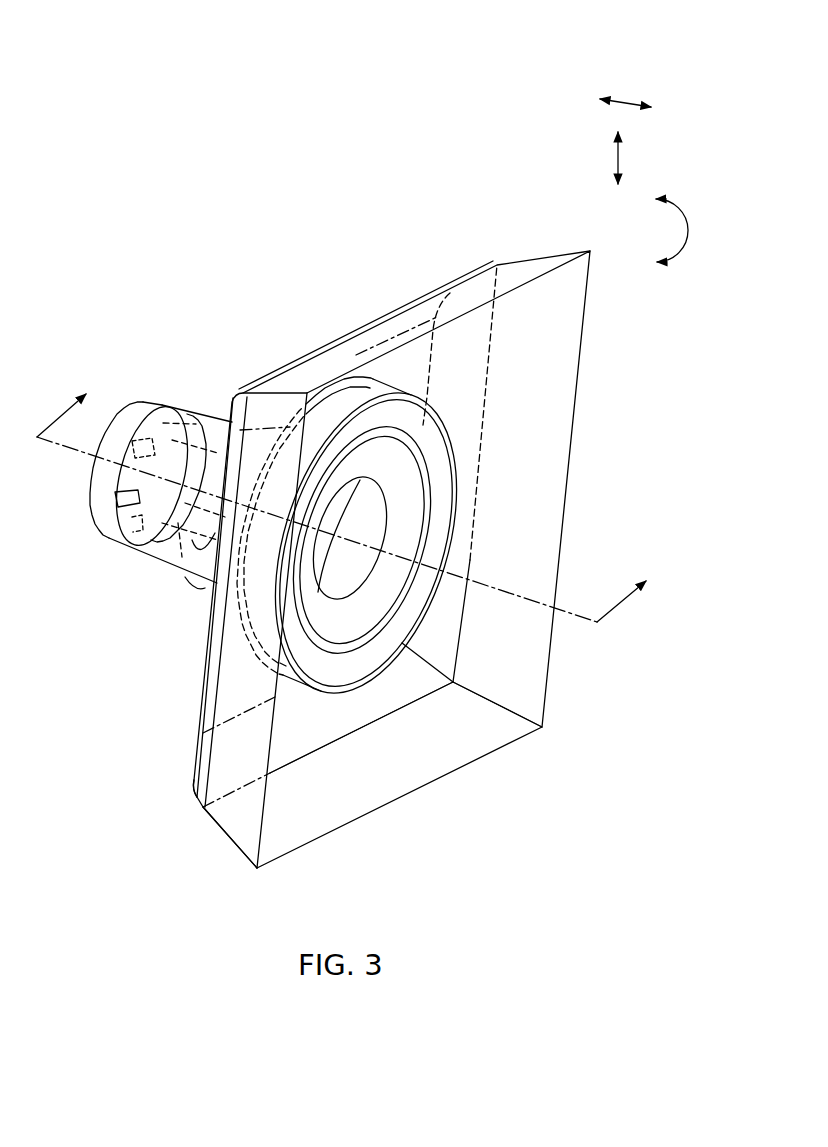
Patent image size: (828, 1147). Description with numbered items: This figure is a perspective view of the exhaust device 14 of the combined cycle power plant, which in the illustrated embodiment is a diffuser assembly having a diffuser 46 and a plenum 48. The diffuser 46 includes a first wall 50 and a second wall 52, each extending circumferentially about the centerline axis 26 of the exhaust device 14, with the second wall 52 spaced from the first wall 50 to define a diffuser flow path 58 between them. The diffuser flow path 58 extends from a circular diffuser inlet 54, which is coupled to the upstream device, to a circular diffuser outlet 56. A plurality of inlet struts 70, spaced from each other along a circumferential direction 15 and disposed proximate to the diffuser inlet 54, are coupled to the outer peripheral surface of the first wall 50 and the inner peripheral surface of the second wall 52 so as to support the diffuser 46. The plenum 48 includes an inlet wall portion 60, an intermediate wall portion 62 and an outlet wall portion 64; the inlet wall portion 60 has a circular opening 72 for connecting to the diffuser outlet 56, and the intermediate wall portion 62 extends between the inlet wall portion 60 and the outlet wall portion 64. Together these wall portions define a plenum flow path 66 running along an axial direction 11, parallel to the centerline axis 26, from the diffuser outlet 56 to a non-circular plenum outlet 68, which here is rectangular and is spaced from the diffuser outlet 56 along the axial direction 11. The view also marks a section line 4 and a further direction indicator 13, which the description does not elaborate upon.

The section line 4- 4 is at (347, 498).
The axial direction 11 is at (622, 100).
The vertical direction arrow 13 is at (615, 157).
The exhaust device 14 is at (168, 52).
The circumferential direction 15 is at (688, 202).
The centerline axis 26 is at (583, 616).
The diffuser 46 is at (182, 569).
The plenum 48 is at (507, 262).
The first wall 50 is at (190, 458).
The second wall 52 is at (145, 420).
The diffuser inlet 54 is at (140, 410).
The diffuser outlet 56 is at (330, 430).
The diffuser flow path 58 is at (210, 550).
The inlet wall portion 60 is at (202, 632).
The intermediate wall portion 62 is at (196, 790).
The outlet wall portion 64 is at (225, 832).
The plenum flow path 66 is at (297, 743).
The non-circular plenum outlet 68 is at (453, 749).
The inlet struts 70 is at (143, 487).
The opening 72 is at (232, 672).